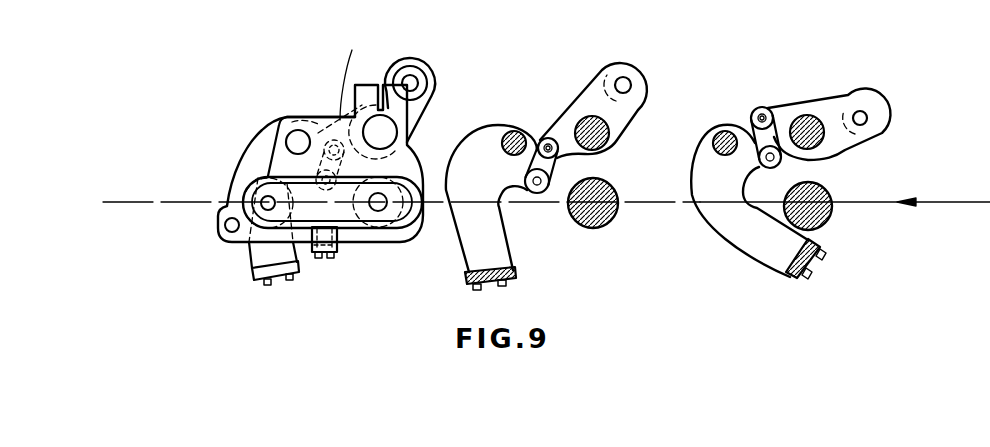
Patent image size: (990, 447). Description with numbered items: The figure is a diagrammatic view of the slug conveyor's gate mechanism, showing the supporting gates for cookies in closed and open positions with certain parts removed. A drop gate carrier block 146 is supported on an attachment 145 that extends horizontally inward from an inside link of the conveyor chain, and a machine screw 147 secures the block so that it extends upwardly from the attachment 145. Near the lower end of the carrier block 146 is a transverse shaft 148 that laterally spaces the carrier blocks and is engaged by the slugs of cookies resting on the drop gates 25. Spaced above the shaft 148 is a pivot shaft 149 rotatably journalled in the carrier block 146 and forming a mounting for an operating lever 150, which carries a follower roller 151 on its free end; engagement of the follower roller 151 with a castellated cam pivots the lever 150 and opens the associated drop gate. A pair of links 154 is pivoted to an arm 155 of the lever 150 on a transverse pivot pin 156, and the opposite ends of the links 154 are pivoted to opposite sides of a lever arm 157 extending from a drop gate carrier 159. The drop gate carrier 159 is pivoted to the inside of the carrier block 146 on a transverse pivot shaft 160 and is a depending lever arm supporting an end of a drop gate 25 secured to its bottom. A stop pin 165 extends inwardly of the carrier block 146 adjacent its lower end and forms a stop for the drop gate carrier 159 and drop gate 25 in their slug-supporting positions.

The drop gate 25 is at (257, 268).
The attachment 145 is at (334, 236).
The drop gate carrier block 146 is at (307, 116).
The machine screw 147 is at (318, 258).
The transverse shaft 148 is at (610, 223).
The pivot shaft 149 is at (396, 136).
The operating lever 150 is at (423, 68).
The follower roller 151 is at (626, 63).
The link 154 is at (407, 163).
The arm 155 is at (786, 105).
The transverse pivot pin 156 is at (546, 138).
The lever arm 157 is at (517, 208).
The drop gate carrier 159 is at (255, 165).
The transverse pivot shaft 160 is at (287, 133).
The stop pin 165 is at (232, 232).